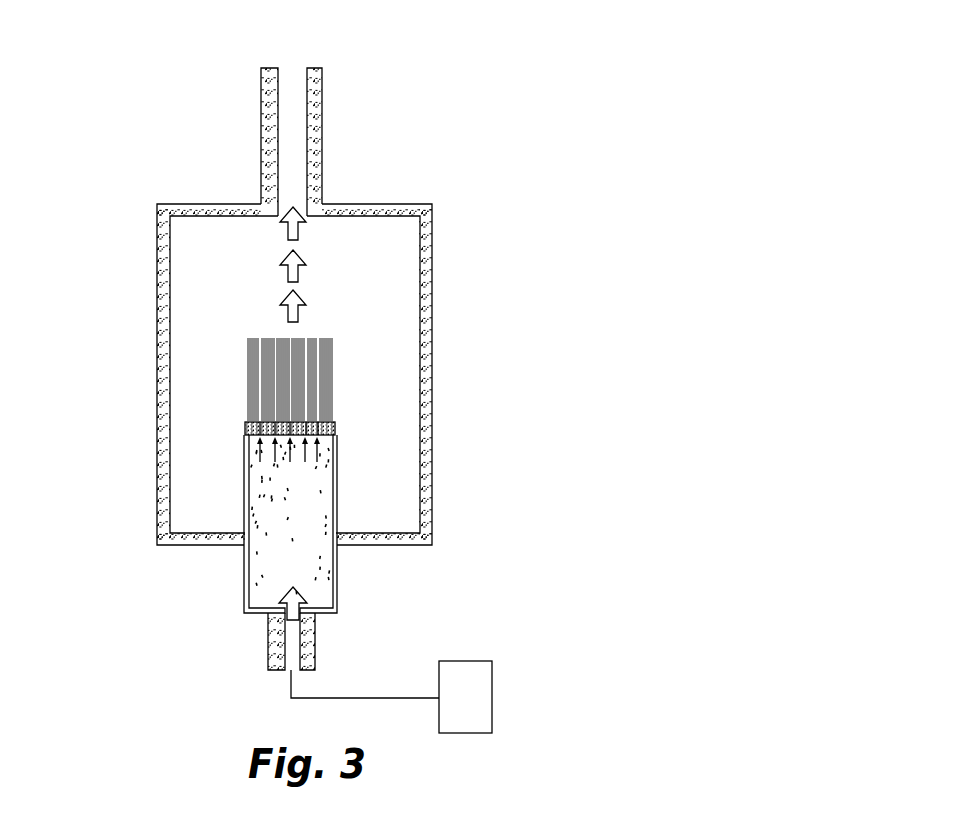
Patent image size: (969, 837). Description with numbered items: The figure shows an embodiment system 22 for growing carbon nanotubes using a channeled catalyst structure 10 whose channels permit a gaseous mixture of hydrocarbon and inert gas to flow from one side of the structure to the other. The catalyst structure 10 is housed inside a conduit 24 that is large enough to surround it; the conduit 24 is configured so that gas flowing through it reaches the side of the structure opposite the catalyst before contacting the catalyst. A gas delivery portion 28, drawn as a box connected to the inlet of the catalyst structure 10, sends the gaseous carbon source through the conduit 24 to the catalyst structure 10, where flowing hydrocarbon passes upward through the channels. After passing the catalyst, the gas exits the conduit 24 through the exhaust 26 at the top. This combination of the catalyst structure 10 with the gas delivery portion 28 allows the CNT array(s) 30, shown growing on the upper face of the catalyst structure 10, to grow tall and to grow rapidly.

The system 22 is at (178, 154).
The conduit 24 is at (432, 248).
The exhaust 26 is at (289, 81).
The catalyst structure 10 is at (333, 414).
The CNT array(s) 30 is at (251, 347).
The gas delivery portion 28 is at (470, 660).